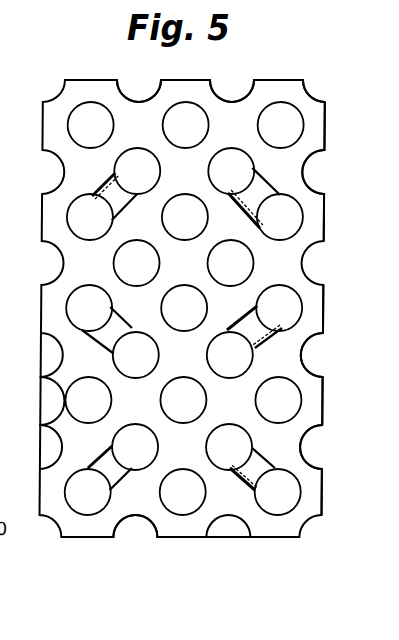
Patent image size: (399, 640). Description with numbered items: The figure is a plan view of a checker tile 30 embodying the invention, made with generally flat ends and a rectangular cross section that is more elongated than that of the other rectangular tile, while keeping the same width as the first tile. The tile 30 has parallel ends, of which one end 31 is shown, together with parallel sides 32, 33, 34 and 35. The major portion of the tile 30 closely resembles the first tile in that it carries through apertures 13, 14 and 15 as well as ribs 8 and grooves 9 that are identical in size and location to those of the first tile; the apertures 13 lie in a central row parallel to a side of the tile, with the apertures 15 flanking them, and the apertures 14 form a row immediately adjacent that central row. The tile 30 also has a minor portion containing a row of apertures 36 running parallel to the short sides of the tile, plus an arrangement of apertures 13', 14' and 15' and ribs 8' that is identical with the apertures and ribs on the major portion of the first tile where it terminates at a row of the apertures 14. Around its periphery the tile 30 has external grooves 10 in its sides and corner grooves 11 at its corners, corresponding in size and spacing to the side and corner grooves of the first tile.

The tile 30 is at (331, 230).
The side 33 is at (285, 80).
The side 34 is at (326, 135).
The end 31 is at (312, 404).
The side 32 is at (43, 406).
The side 35 is at (190, 537).
The corner grooves 11 is at (320, 98).
The external grooves 10 is at (328, 470).
The apertures 15' is at (189, 168).
The apertures 13' is at (202, 125).
The apertures 14' is at (185, 194).
The apertures 36 is at (154, 262).
The through apertures 15 is at (183, 354).
The through apertures 14 is at (184, 399).
The through apertures 13 is at (183, 426).
The grooves 9 is at (104, 188).
The ribs 8' is at (291, 195).
The ribs 8 is at (288, 335).